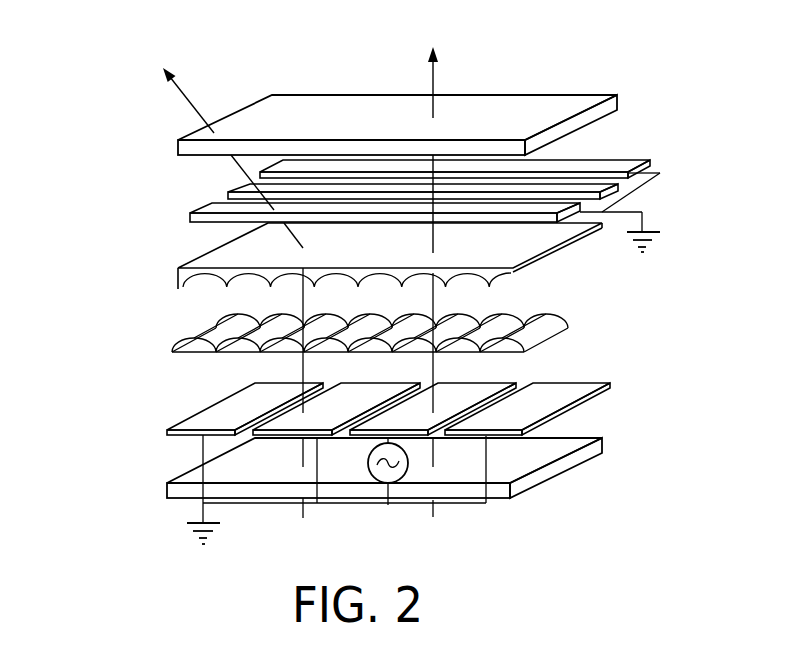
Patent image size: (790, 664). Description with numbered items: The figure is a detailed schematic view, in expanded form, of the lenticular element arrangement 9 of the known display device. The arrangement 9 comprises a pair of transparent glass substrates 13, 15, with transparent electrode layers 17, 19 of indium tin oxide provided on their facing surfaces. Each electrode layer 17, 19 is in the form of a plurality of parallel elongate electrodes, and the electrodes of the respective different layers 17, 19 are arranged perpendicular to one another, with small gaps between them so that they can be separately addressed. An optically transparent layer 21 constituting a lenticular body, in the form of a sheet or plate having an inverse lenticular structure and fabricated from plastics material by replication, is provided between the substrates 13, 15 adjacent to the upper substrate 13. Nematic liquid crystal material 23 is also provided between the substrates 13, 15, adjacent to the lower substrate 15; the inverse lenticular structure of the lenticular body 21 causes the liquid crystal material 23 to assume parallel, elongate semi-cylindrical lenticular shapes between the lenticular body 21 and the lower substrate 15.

The lenticular element arrangement 9 is at (97, 82).
The upper transparent glass substrate 13 is at (178, 147).
The lower transparent glass substrate 15 is at (167, 490).
The transparent electrode layer 17 is at (190, 218).
The transparent electrode layer 19 is at (167, 433).
The lenticular body 21 is at (178, 275).
The nematic liquid crystal material 23 is at (173, 349).